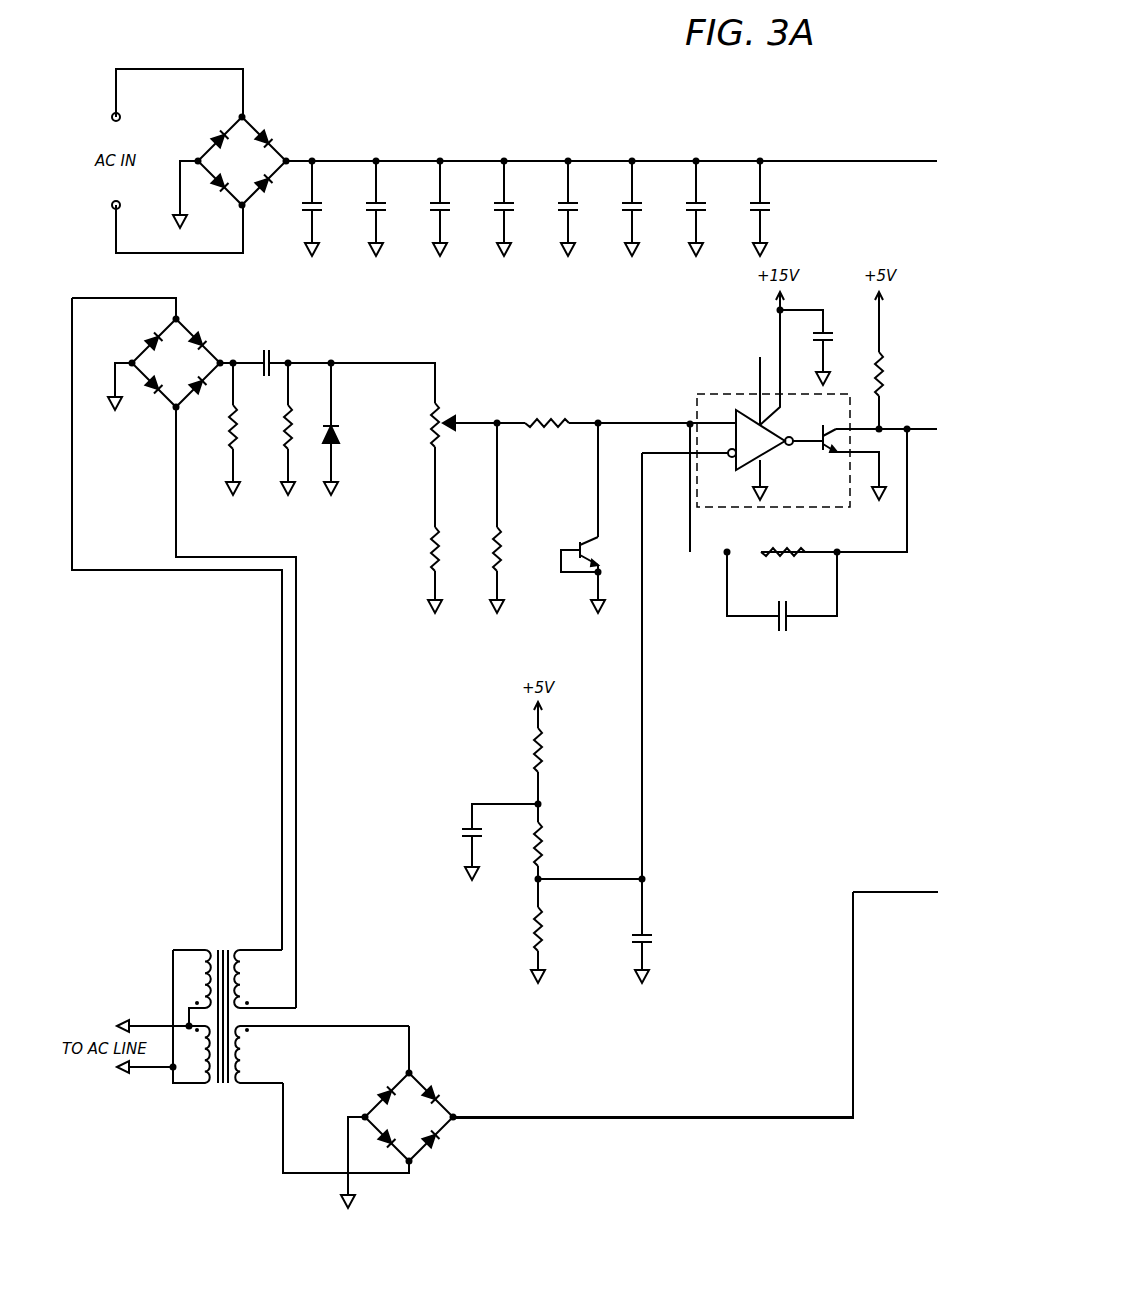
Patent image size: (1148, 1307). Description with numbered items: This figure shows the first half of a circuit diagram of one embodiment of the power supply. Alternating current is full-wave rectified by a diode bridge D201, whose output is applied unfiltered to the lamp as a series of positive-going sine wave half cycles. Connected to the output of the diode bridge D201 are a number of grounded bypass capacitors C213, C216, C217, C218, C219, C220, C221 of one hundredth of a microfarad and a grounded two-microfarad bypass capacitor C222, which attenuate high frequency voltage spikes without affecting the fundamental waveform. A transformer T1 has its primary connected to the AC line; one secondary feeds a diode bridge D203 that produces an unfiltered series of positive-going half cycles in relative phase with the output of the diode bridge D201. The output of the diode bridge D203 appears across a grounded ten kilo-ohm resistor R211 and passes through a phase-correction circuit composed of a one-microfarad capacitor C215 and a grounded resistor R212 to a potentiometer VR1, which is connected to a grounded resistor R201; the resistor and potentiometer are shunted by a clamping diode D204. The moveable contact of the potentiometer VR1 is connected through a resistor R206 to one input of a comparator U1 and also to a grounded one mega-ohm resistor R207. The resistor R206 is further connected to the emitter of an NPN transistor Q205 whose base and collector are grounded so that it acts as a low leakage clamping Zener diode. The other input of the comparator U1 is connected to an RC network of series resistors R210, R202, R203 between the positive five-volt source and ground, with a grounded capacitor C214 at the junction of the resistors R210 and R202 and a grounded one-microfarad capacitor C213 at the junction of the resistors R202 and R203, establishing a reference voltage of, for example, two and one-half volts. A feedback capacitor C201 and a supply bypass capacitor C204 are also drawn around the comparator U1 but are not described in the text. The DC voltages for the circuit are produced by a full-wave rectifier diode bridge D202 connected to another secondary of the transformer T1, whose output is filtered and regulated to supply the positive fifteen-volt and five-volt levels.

The diode bridge D201 is at (242, 161).
The bypass capacitor C213 is at (322, 203).
The bypass capacitor C216 is at (386, 203).
The bypass capacitor C217 is at (450, 203).
The bypass capacitor C218 is at (514, 203).
The bypass capacitor C219 is at (578, 203).
The bypass capacitor C220 is at (642, 203).
The bypass capacitor C221 is at (706, 203).
The bypass capacitor C222 is at (770, 203).
The capacitor C204 is at (852, 322).
The resistor R206 is at (888, 384).
The comparator U1 is at (817, 432).
The resistor R201 is at (792, 535).
The capacitor C201 is at (777, 605).
The diode bridge D203 is at (176, 363).
The capacitor C215 is at (268, 347).
The resistor R211 is at (224, 443).
The resistor R212 is at (280, 443).
The clamping diode D204 is at (359, 432).
The potentiometer VR1 is at (450, 415).
The resistor R207 is at (526, 553).
The NPN transistor Q205 is at (582, 540).
The resistor R210 is at (545, 752).
The resistor R202 is at (545, 842).
The resistor R203 is at (549, 942).
The capacitor C214 is at (485, 842).
The transformer T1 is at (291, 1010).
The diode bridge D202 is at (409, 1117).